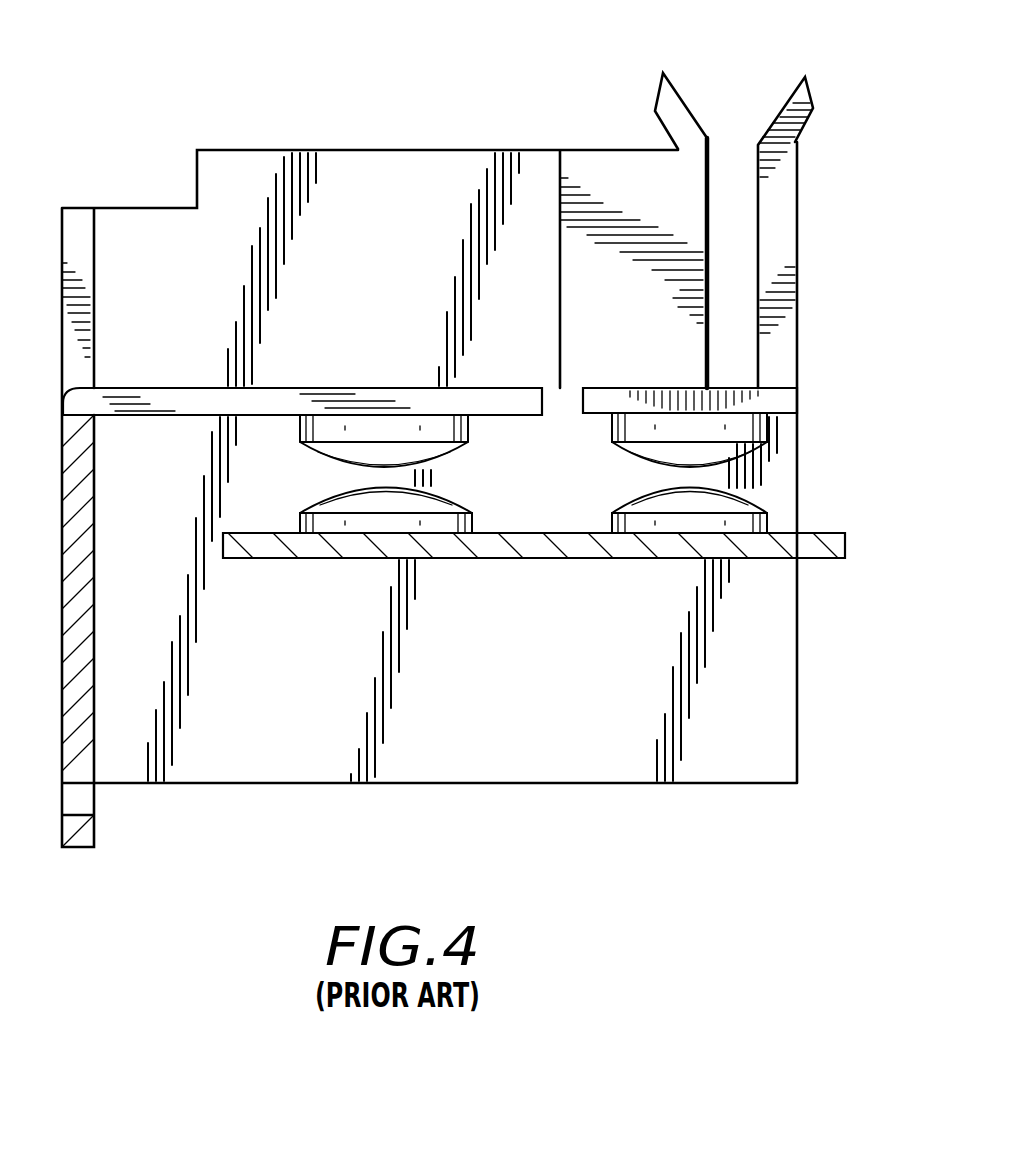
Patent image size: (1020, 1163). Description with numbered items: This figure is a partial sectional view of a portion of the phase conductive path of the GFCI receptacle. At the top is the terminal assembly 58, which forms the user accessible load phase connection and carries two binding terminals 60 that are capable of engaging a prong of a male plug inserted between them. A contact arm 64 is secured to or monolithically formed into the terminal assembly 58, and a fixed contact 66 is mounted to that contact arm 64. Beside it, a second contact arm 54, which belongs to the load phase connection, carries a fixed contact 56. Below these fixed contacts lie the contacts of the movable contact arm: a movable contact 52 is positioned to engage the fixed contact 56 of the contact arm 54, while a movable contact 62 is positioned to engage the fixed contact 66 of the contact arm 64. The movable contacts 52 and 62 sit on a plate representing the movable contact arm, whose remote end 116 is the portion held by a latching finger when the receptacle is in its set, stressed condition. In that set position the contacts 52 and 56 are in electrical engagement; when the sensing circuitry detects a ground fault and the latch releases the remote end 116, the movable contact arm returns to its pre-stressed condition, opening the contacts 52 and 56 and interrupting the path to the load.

The movable contact 52 is at (315, 507).
The contact arm 54 is at (176, 388).
The fixed contact 56 is at (445, 458).
The terminal assembly 58 is at (445, 150).
The binding terminals 60 is at (778, 118).
The movable contact 62 is at (738, 503).
The contact arm 64 is at (650, 388).
The fixed contact 66 is at (768, 428).
The remote end 116 is at (845, 545).